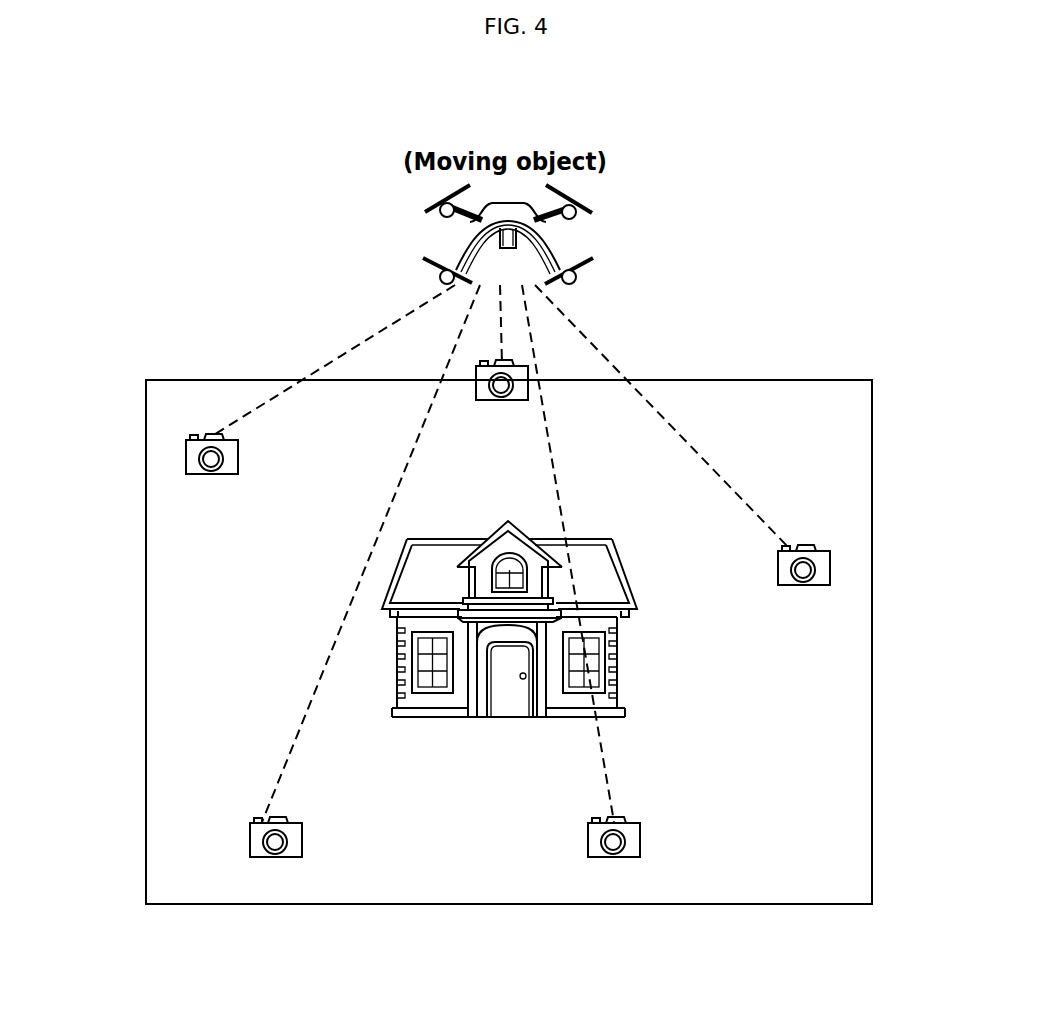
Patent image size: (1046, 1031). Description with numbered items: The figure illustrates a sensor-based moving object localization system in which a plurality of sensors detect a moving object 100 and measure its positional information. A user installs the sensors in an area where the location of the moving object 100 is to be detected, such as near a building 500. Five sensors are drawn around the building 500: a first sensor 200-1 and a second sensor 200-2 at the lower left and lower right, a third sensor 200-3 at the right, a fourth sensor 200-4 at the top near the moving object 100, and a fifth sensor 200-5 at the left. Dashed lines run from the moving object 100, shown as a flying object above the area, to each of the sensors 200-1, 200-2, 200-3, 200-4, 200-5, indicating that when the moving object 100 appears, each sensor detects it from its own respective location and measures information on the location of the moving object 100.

The moving object 100 is at (544, 221).
The first sensor 200-1 is at (250, 840).
The second sensor 200-2 is at (640, 841).
The third sensor 200-3 is at (830, 568).
The fourth sensor 200-4 is at (529, 366).
The fifth sensor 200-5 is at (186, 457).
The building 500 is at (618, 653).